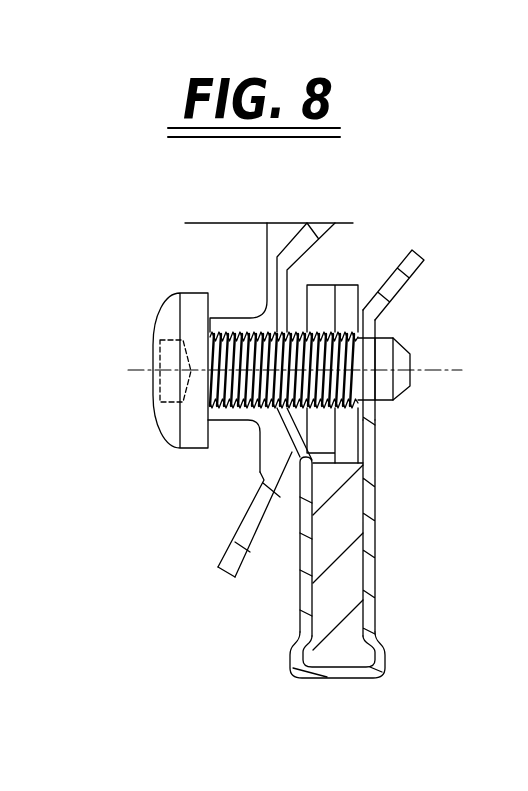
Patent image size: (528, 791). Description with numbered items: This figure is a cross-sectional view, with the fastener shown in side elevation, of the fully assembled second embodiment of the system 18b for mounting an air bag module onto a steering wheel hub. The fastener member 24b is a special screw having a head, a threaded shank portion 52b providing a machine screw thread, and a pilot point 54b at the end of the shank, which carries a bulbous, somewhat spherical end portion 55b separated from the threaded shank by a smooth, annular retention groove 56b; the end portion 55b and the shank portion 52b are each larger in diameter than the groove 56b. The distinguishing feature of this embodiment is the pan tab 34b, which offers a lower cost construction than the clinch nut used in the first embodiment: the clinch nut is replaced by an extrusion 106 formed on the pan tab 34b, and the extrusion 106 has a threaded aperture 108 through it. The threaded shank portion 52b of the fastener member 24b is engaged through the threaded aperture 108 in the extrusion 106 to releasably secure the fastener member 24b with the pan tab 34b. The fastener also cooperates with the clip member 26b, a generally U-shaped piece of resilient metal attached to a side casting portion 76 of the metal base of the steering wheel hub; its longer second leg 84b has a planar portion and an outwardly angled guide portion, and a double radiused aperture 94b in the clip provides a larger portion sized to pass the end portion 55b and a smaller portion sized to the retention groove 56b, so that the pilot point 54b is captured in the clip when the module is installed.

The system 18b is at (222, 500).
The fastener member 24b is at (156, 434).
The clip member 26b is at (381, 552).
The pan tab 34b is at (260, 550).
The threaded shank portion 52b is at (343, 333).
The pilot point 54b is at (412, 381).
The end portion 55b is at (403, 352).
The retention groove 56b is at (367, 338).
The side casting portion 76 is at (358, 623).
The second leg 84b is at (376, 497).
The double radiused aperture 94b is at (368, 418).
The extrusion 106 is at (266, 420).
The threaded aperture 108 is at (252, 420).